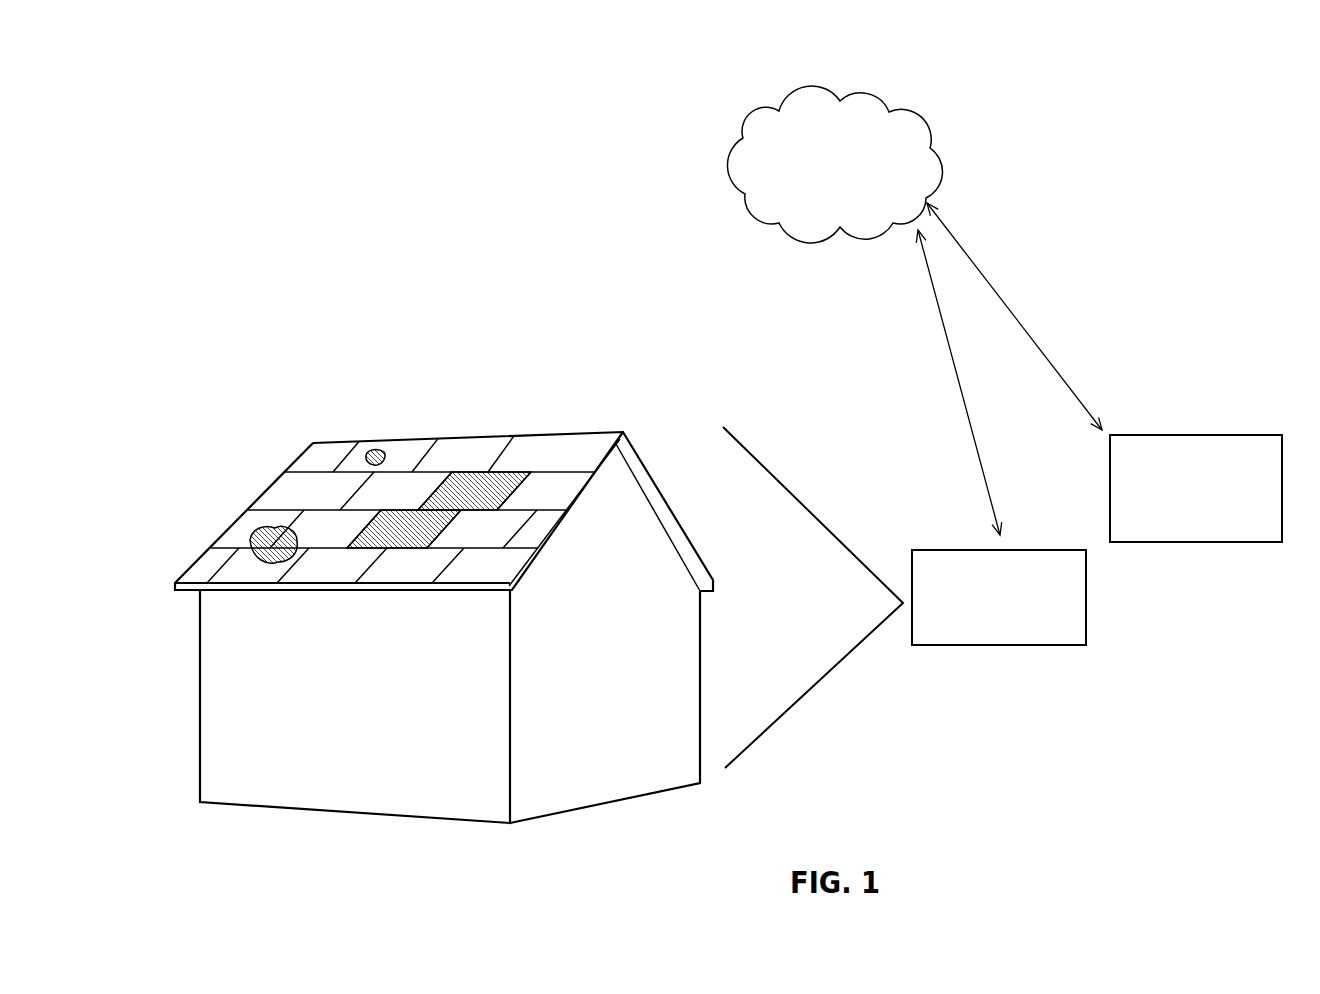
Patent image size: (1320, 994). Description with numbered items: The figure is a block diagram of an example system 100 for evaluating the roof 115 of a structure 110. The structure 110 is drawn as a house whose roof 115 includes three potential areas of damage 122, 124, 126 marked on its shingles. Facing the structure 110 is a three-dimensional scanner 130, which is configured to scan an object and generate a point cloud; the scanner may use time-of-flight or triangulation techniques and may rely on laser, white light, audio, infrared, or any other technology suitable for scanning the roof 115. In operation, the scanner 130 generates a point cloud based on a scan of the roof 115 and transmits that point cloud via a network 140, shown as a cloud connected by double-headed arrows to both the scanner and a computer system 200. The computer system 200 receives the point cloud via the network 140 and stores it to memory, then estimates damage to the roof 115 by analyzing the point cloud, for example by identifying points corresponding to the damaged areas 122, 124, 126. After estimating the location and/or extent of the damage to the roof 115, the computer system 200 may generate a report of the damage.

The system 100 is at (518, 102).
The structure 110 is at (625, 800).
The roof 115 is at (298, 461).
The potential area of damage 122 is at (373, 449).
The potential area of damage 124 is at (265, 530).
The potential area of damage 126 is at (464, 471).
The 3D scanner 130 is at (1052, 645).
The network 140 is at (920, 113).
The computer system 200 is at (1232, 542).